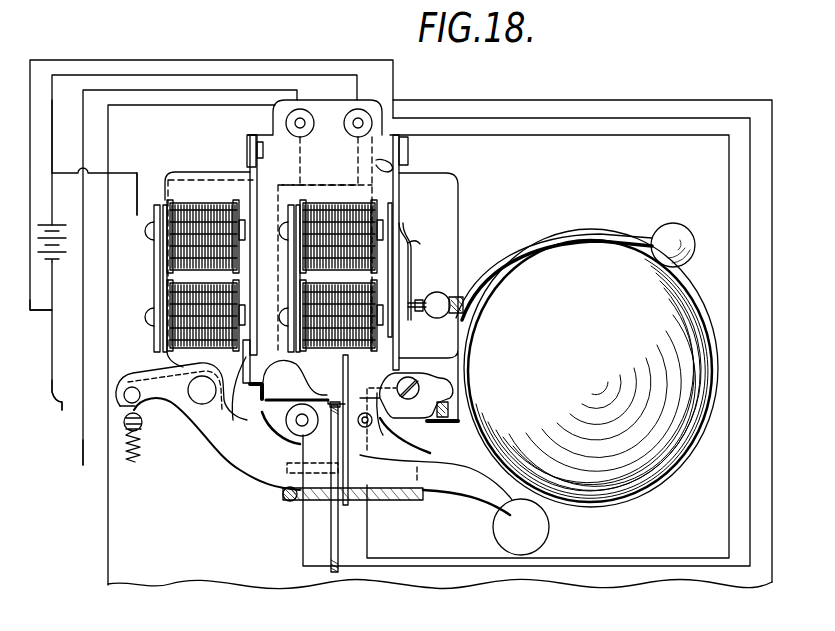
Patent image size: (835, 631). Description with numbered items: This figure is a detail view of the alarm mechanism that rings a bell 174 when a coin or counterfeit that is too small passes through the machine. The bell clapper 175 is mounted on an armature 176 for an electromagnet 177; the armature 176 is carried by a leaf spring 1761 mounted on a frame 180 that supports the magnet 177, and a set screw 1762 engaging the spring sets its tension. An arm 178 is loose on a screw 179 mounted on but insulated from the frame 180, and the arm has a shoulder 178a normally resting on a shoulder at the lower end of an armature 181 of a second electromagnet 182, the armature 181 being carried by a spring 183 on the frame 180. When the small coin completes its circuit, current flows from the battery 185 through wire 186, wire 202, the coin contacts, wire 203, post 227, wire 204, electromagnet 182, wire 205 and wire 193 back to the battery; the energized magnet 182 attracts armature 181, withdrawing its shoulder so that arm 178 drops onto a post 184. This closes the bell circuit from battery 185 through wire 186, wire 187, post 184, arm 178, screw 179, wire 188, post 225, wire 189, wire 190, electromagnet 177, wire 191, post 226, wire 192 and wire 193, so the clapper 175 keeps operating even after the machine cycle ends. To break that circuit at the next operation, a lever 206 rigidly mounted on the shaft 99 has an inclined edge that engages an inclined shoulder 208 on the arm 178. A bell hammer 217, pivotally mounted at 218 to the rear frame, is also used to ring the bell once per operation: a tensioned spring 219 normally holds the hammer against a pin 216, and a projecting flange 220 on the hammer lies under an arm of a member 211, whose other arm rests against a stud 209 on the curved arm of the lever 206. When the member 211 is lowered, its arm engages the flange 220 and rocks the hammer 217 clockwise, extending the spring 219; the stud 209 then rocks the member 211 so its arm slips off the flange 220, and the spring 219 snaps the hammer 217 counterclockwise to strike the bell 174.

The bell 174 is at (670, 478).
The clapper 175 is at (622, 235).
The armature 176 is at (400, 214).
The leaf spring 1761 is at (436, 271).
The set screw 1762 is at (460, 285).
The electromagnet 177 is at (322, 208).
The arm 178 is at (305, 383).
The shoulder 178a is at (217, 444).
The screw 179 is at (398, 385).
The frame 180 is at (452, 231).
The armature 181 is at (246, 380).
The electromagnet 182 is at (211, 186).
The spring 183 is at (258, 197).
The post 184 is at (297, 427).
The battery 185 is at (55, 263).
The wire 186 is at (55, 304).
The wire 187 is at (595, 118).
The wire 188 is at (386, 428).
The wire 189 is at (364, 514).
The wire 190 is at (398, 162).
The wire 191 is at (358, 146).
The wire 192 is at (342, 72).
The wire 193 is at (67, 210).
The wire 202 is at (57, 411).
The wire 203 is at (82, 455).
The wire 204 is at (228, 180).
The wire 205 is at (134, 172).
The lever 206 is at (330, 555).
The inclined shoulder 208 is at (317, 373).
The stud 209 is at (352, 505).
The member 211 is at (436, 479).
The pin 216 is at (150, 410).
The bell hammer 217 is at (503, 528).
The pivot 218 is at (196, 396).
The tensioned spring 219 is at (135, 462).
The projecting flange 220 is at (367, 455).
The post 225 is at (357, 420).
The post 226 is at (360, 122).
The post 227 is at (301, 124).
The shaft 99 is at (285, 500).